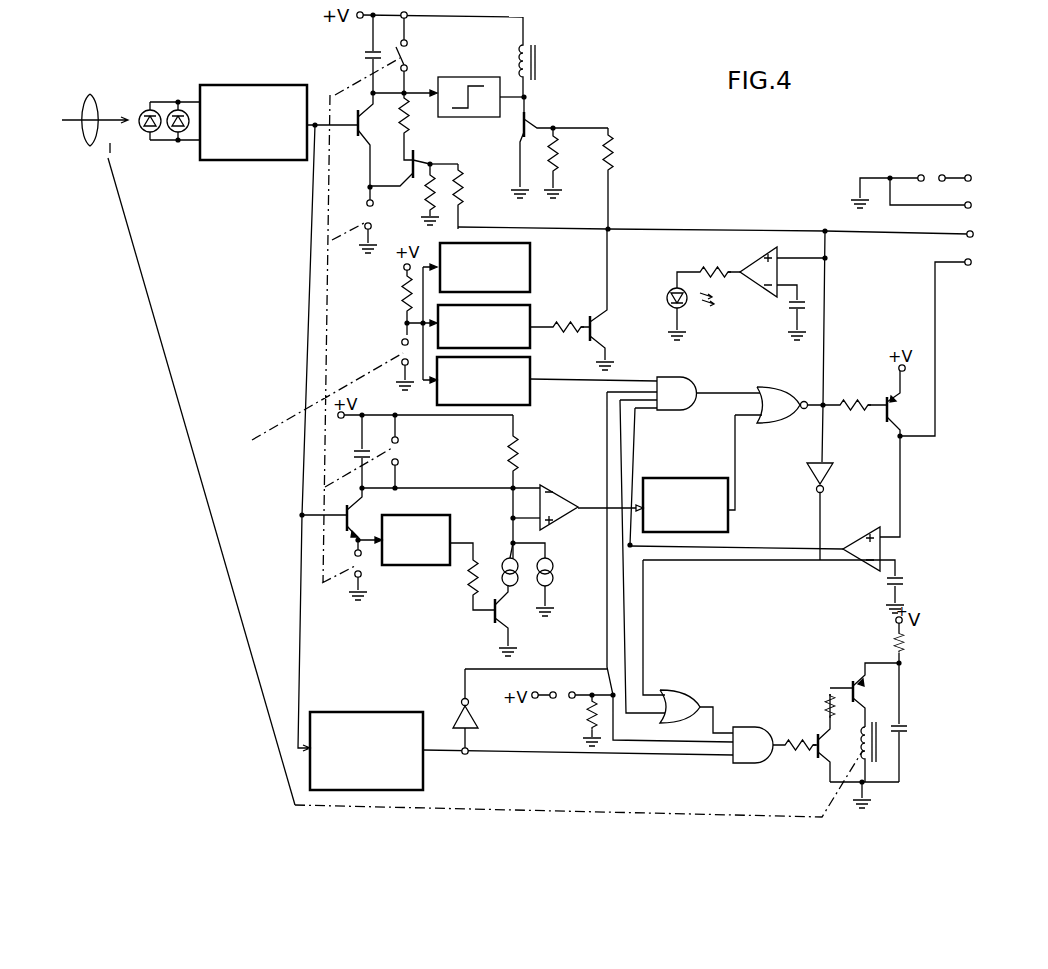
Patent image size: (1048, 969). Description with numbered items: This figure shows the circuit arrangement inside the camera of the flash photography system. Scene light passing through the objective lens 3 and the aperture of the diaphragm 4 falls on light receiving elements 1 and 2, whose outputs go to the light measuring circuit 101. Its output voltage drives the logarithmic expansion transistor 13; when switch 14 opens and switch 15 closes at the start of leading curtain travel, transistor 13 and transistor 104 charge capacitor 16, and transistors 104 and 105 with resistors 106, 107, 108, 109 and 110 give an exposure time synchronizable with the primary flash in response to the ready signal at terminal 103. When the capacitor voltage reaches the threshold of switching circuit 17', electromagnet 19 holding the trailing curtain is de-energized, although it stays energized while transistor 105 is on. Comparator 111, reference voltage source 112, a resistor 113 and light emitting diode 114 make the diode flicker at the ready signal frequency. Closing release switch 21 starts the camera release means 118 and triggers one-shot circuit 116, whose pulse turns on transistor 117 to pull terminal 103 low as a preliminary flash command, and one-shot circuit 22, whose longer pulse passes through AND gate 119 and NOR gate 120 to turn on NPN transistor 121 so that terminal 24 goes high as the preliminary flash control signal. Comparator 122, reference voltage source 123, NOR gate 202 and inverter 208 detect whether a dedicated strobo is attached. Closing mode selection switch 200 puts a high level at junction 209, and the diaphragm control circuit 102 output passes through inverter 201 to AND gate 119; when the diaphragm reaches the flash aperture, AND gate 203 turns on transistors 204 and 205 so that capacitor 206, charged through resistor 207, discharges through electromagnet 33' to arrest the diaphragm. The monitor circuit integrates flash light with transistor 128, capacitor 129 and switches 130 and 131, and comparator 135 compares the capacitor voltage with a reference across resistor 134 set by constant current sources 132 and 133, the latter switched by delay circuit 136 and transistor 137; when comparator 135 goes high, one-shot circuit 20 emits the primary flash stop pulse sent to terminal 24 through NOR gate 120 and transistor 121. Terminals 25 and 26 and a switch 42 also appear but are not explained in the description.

The light receiving element 1 is at (150, 133).
The light receiving element 2 is at (178, 133).
The objective lens 3 is at (88, 148).
The diaphragm 4 is at (108, 158).
The logarithmic expansion transistor 13 is at (366, 133).
The switch 14 is at (415, 52).
The switch 15 is at (362, 233).
The capacitor 16 is at (366, 54).
The switching circuit 17' is at (469, 78).
The electromagnet 19 is at (537, 58).
The one-shot circuit 20 is at (683, 478).
The release switch 21 is at (397, 350).
The one-shot circuit 22 is at (530, 360).
The terminal 24 is at (955, 344).
The terminal 25 is at (987, 205).
The terminal 26 is at (987, 176).
The electromagnet 33' is at (899, 759).
The switch 42 is at (925, 168).
The light measuring circuit 101 is at (255, 85).
The diaphragm control circuit 102 is at (365, 712).
The terminal 103 is at (993, 234).
The transistor 104 is at (418, 154).
The transistor 105 is at (533, 122).
The resistor 106 is at (407, 112).
The resistor 107 is at (425, 180).
The resistor 108 is at (485, 193).
The resistor 109 is at (550, 136).
The resistor 110 is at (615, 150).
The comparator 111 is at (756, 286).
The reference voltage source 112 is at (792, 309).
The resistor 113 is at (710, 270).
The light emitting diode 114 is at (667, 298).
The one-shot circuit 116 is at (533, 313).
The transistor 117 is at (608, 328).
The camera release means 118 is at (510, 240).
The AND gate 119 is at (658, 377).
The NOR gate 120 is at (765, 388).
The NPN transistor 121 is at (885, 417).
The comparator 122 is at (858, 535).
The reference voltage source 123 is at (902, 580).
The transistor 128 is at (347, 520).
The capacitor 129 is at (358, 450).
The switch 130 is at (362, 562).
The switch 131 is at (410, 451).
The constant current source 132 is at (568, 552).
The constant current source 133 is at (519, 583).
The resistor 134 is at (522, 440).
The comparator 135 is at (566, 486).
The delay circuit 136 is at (433, 517).
The transistor 137 is at (490, 618).
The mode selection switch 200 is at (572, 715).
The inverter 201 is at (479, 714).
The NOR gate 202 is at (686, 690).
The AND gate 203 is at (766, 727).
The transistor 204 is at (812, 757).
The transistor 205 is at (857, 680).
The capacitor 206 is at (914, 716).
The resistor 207 is at (918, 635).
The inverter 208 is at (805, 462).
The junction 209 is at (612, 693).